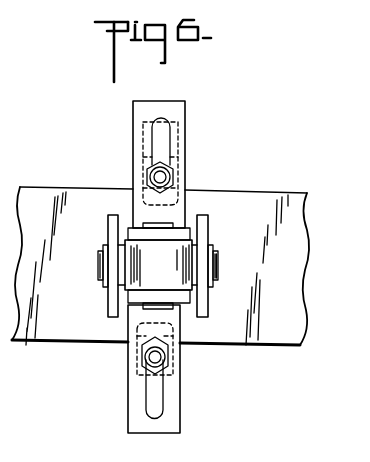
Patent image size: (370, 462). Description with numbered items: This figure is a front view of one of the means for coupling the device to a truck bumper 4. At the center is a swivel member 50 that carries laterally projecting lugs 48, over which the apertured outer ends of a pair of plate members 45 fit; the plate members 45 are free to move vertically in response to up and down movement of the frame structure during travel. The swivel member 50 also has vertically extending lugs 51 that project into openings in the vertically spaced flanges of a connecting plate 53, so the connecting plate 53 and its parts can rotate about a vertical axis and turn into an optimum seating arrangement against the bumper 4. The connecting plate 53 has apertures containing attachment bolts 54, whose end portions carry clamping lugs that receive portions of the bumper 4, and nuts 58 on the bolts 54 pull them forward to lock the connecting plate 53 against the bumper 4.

The vehicle bumper 4 is at (285, 341).
The plate members 45 is at (108, 228).
The lugs 48 is at (97, 268).
The swivel member 50 is at (166, 272).
The vertically extending lugs 51 is at (167, 224).
The connecting plate 53 is at (186, 121).
The attachment bolts 54 is at (163, 176).
The nuts 58 is at (150, 176).